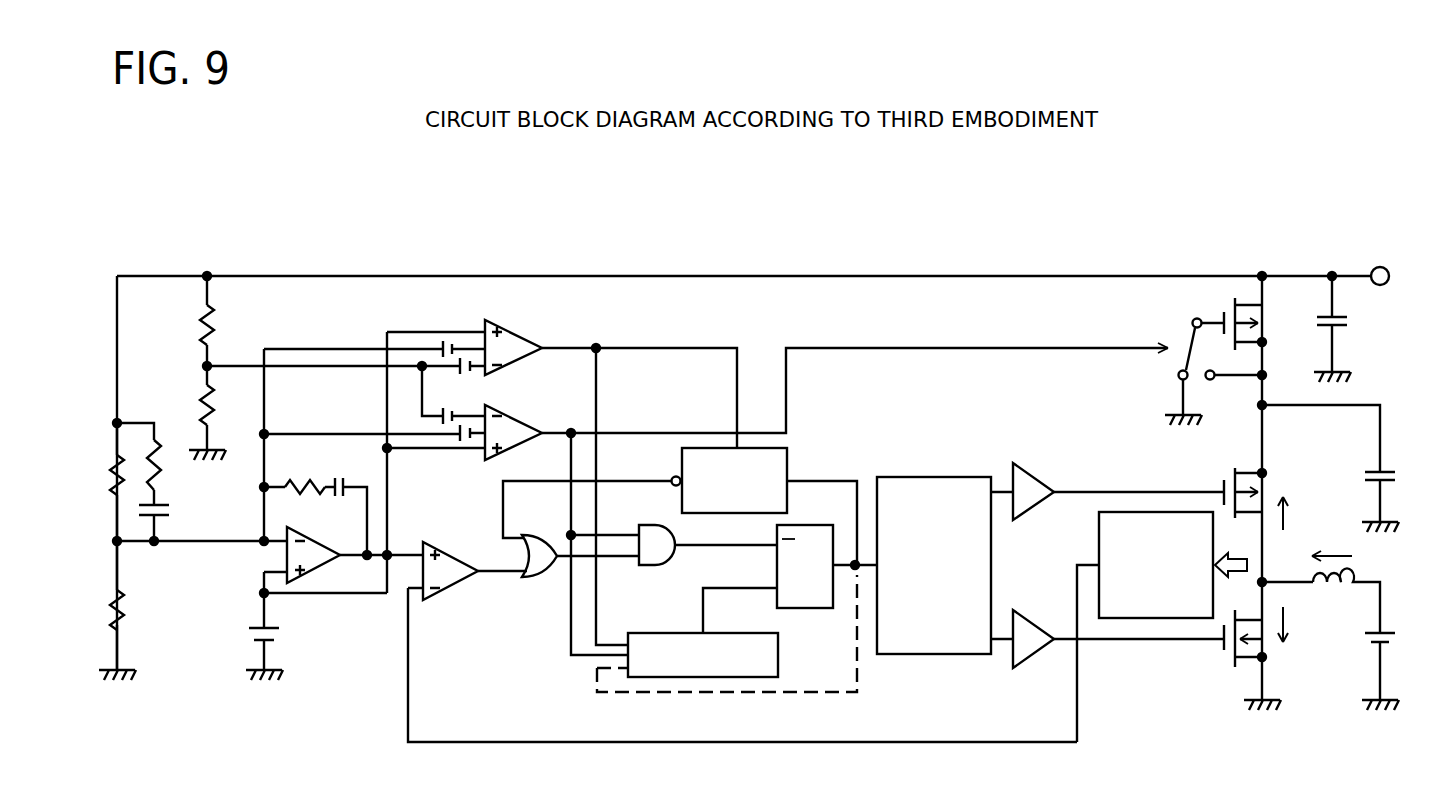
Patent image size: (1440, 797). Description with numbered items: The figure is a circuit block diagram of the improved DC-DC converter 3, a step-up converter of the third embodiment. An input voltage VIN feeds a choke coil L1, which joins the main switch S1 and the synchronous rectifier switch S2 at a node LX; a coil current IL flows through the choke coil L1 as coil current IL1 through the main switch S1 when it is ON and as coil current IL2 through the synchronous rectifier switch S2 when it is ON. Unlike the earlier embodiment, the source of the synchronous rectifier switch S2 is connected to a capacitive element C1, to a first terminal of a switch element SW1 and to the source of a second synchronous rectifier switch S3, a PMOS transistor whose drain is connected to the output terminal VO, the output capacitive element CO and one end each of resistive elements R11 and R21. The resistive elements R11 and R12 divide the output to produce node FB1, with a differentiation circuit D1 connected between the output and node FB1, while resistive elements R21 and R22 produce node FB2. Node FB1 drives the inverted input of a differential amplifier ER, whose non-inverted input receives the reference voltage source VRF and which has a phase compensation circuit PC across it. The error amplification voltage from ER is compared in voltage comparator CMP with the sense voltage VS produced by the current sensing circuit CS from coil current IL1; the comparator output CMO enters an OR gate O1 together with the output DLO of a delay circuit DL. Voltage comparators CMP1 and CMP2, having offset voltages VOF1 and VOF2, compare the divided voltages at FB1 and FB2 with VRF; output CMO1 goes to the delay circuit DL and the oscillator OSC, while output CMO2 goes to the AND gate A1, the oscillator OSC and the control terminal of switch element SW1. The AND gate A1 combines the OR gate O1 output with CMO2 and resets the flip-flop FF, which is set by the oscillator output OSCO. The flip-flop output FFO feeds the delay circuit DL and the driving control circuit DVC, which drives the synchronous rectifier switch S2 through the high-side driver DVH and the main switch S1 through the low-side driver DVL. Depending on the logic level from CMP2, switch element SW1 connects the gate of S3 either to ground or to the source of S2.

The improved DC-DC converter 3 is at (1163, 196).
The resistive element R21 is at (184, 325).
The resistive element R22 is at (184, 404).
The connection node FB2 is at (333, 355).
The resistive element R11 is at (93, 482).
The resistive element R12 is at (93, 605).
The differentiation circuit D1 is at (177, 440).
The connection node FB1 is at (202, 529).
The phase compensation circuit PC is at (355, 468).
The differential amplifier ER is at (315, 565).
The reference voltage source VRF is at (287, 631).
The offset voltage VOF1 is at (462, 350).
The offset voltage VOF2 is at (465, 440).
The voltage comparator CMP1 is at (510, 328).
The voltage comparator CMP2 is at (510, 415).
The output terminal of voltage comparator CMP1 CMO1 is at (639, 384).
The output terminal of voltage comparator CMP2 CMO2 is at (855, 390).
The delay circuit DL is at (712, 448).
The output terminal of delay circuit DLO is at (592, 496).
The OR gate O1 is at (532, 578).
The output terminal of voltage comparator CMP CMO is at (502, 557).
The voltage comparator CMP is at (448, 590).
The sense voltage VS is at (1065, 653).
The AND gate A1 is at (650, 566).
The flip-flop FF is at (797, 610).
The output terminal of oscillator OSCO is at (740, 597).
The oscillator OSC is at (695, 678).
The output terminal of flip-flop FFO is at (822, 508).
The driving control circuit DVC is at (982, 477).
The high-side driver DVH is at (1035, 478).
The low-side driver DVL is at (1035, 623).
The current sensing circuit CS is at (1099, 530).
The switch element SW1 is at (1215, 355).
The second synchronous rectifier switch S3 is at (1259, 324).
The output terminal VO is at (1397, 278).
The output capacitive element CO is at (1348, 329).
The capacitive element C1 is at (1341, 466).
The synchronous rectifier switch S2 is at (1259, 489).
The coil current IL2 is at (1300, 513).
The connection node LX is at (1285, 571).
The choke coil L1 is at (1346, 600).
The coil current IL is at (1332, 544).
The input voltage VIN is at (1393, 658).
The main switch S1 is at (1259, 641).
The coil current IL1 is at (1300, 625).